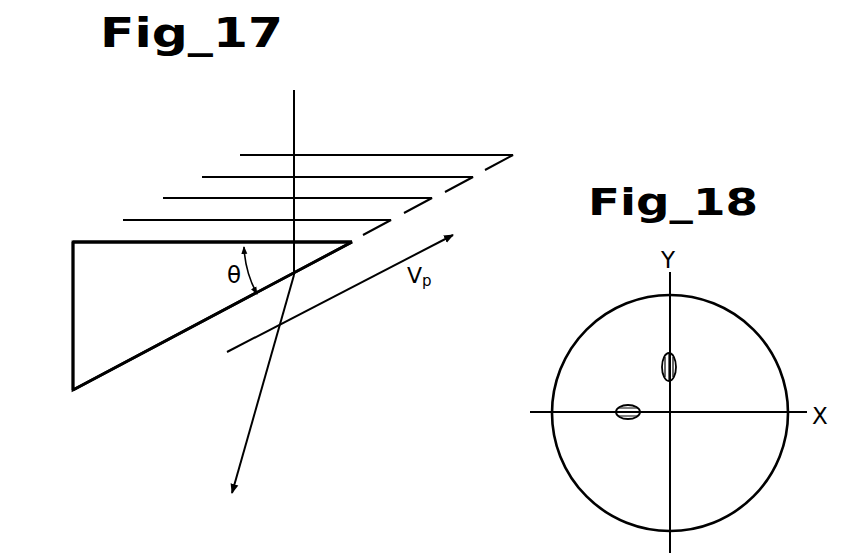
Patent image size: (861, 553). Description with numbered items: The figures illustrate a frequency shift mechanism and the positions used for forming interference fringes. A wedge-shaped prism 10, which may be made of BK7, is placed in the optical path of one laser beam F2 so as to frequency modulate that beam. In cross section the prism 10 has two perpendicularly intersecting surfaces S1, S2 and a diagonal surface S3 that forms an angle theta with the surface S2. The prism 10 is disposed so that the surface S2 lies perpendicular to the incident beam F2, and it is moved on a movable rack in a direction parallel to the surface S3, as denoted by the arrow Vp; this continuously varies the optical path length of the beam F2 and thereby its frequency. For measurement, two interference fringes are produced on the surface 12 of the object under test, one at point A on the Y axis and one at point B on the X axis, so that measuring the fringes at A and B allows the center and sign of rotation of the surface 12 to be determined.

In FIG. 17, the wedge-shaped prism 10 is at (117, 350).
In FIG. 18, the surface of the object under test 12 is at (758, 350).
In FIG. 17, the surface S1 is at (73, 307).
In FIG. 17, the surface S2 is at (105, 242).
In FIG. 17, the diagonal surface S3 is at (158, 348).
In FIG. 17, the laser beam F2 is at (293, 133).
In FIG. 18, the point A is at (677, 362).
In FIG. 18, the point B is at (627, 405).